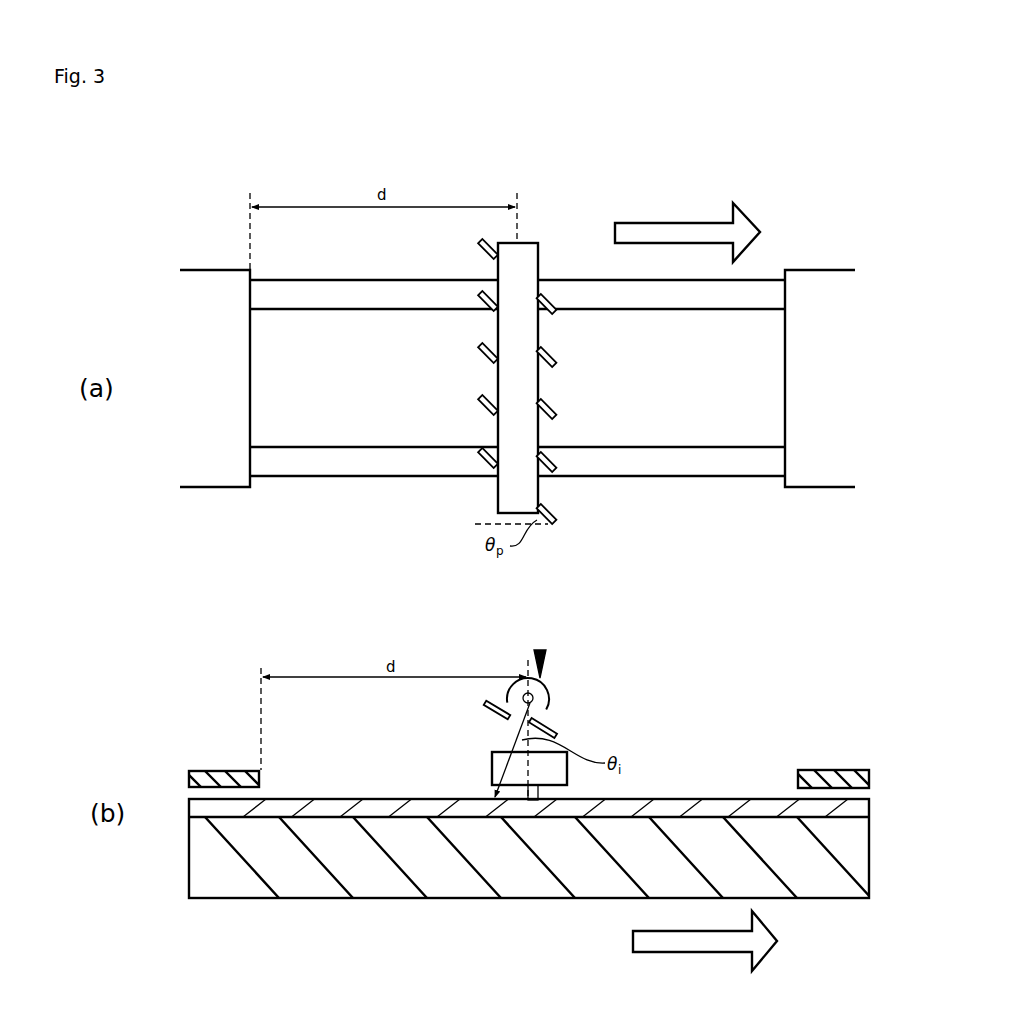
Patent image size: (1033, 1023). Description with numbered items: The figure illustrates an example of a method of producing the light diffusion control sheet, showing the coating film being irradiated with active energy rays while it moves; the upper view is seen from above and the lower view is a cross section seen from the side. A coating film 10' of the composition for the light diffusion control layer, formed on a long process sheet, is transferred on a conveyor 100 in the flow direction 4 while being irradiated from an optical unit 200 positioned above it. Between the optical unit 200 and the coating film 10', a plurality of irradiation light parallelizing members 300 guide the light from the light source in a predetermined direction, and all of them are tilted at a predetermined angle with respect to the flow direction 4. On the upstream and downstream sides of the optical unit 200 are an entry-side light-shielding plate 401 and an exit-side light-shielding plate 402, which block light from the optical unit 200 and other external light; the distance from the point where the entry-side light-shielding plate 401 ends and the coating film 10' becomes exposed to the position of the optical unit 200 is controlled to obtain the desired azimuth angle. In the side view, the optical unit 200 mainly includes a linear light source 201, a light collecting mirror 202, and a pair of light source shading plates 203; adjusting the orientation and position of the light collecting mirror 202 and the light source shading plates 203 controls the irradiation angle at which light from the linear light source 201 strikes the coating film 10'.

The conveyor 100 is at (723, 460).
The coating film 10' is at (529, 624).
The optical unit 200 is at (525, 250).
The linear light source 201 is at (545, 680).
The light collecting mirror 202 is at (553, 700).
The light source shading plate 203 is at (485, 716).
The irradiation light parallelizing member 300 is at (487, 462).
The flow direction 4 is at (687, 230).
The entry-side light-shielding plate 401 is at (220, 277).
The exit-side light-shielding plate 402 is at (808, 277).